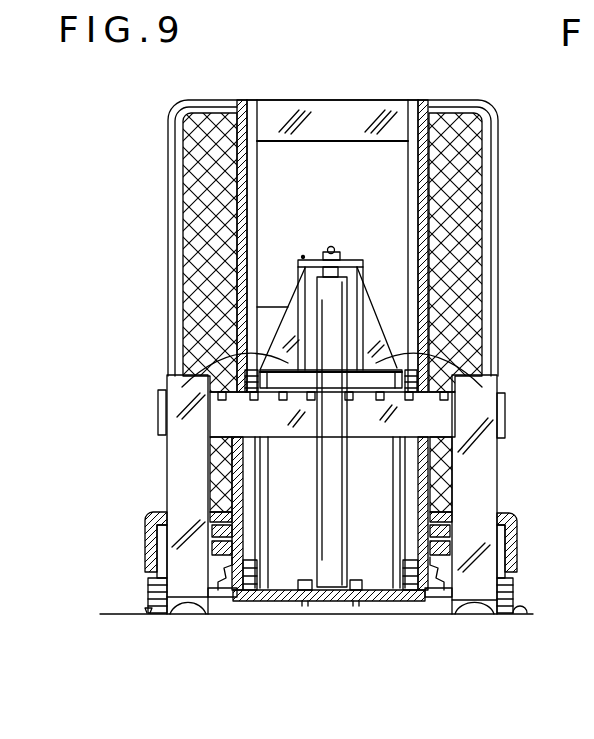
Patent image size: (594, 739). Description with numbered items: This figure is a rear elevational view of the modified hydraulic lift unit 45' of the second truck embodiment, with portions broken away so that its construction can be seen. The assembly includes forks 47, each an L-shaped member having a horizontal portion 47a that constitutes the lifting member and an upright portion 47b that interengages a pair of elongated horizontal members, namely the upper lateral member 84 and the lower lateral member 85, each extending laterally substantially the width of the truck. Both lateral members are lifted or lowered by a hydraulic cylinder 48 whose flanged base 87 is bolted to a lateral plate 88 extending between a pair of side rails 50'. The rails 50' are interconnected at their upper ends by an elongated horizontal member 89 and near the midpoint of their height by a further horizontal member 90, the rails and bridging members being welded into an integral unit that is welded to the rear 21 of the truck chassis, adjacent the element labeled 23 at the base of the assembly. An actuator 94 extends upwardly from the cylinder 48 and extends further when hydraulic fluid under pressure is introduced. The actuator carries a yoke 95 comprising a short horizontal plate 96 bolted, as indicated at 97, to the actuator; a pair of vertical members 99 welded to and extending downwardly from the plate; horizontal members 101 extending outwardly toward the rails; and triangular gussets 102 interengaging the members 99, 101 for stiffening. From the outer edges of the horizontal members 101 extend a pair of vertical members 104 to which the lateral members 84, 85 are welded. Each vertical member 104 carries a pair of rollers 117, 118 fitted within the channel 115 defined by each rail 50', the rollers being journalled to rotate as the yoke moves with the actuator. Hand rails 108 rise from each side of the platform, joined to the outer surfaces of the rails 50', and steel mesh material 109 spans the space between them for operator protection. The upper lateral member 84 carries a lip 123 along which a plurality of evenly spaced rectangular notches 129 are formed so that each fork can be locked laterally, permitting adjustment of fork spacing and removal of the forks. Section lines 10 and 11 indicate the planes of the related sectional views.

The section line 10- 10 is at (385, 52).
The section line 11- 11 is at (93, 233).
The rear of the truck chassis 21 is at (513, 526).
The base foot 23 is at (147, 615).
The hydraulic lift unit 45' is at (504, 332).
The fork 47 is at (148, 595).
The horizontal portion 47a is at (187, 600).
The upright portion 47b is at (165, 482).
The hydraulic cylinder 48 is at (347, 488).
The side rails 50' is at (333, 312).
The upper lateral member 84 is at (158, 410).
The lower lateral member 85 is at (152, 578).
The flanged base 87 is at (363, 587).
The lateral plate 88 is at (329, 626).
The elongated horizontal member 89 is at (348, 100).
The elongated horizontal member 90 is at (387, 313).
The actuator 94 is at (345, 259).
The yoke 95 is at (303, 257).
The horizontal plate 96 is at (321, 255).
The bolt 97 is at (333, 247).
The vertical members 99 is at (297, 300).
The horizontal members 101 is at (245, 373).
The gussets 102 is at (290, 307).
The vertical members 104 is at (268, 520).
The hand rails 108 is at (170, 122).
The steel mesh material 109 is at (214, 130).
The channel 115 is at (250, 170).
The roller 117 is at (403, 366).
The roller 118 is at (256, 592).
The lip 123 is at (168, 372).
The notches 129 is at (222, 401).